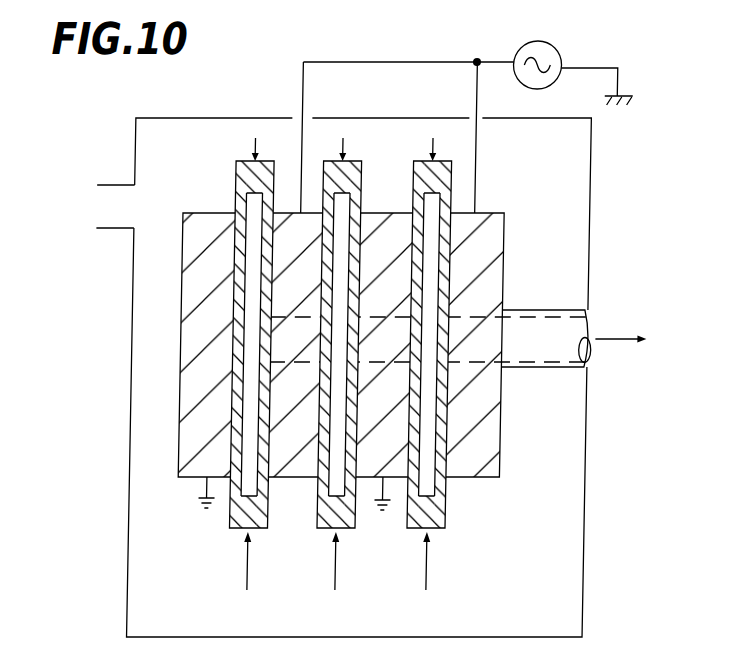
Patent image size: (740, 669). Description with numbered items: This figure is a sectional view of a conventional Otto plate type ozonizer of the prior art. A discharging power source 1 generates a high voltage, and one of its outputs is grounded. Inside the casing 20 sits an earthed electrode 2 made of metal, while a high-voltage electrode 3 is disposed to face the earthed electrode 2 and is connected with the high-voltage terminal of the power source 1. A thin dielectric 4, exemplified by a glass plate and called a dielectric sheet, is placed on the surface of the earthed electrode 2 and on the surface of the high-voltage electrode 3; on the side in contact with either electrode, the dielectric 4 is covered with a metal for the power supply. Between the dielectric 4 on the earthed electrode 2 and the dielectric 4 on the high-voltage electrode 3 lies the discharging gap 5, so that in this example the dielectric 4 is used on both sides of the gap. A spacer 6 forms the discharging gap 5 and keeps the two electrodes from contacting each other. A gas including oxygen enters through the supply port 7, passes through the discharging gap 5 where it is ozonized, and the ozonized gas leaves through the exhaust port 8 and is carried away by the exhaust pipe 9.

The discharging power source 1 is at (547, 52).
The earthed electrode 2 is at (195, 465).
The high-voltage electrode 3 is at (486, 240).
The dielectric 4 is at (437, 446).
The discharging gap 5 is at (421, 390).
The spacer 6 is at (246, 190).
The supply port 7 is at (85, 210).
The exhaust port 8 is at (631, 340).
The exhaust pipe 9 is at (537, 310).
The casing 20 is at (126, 347).